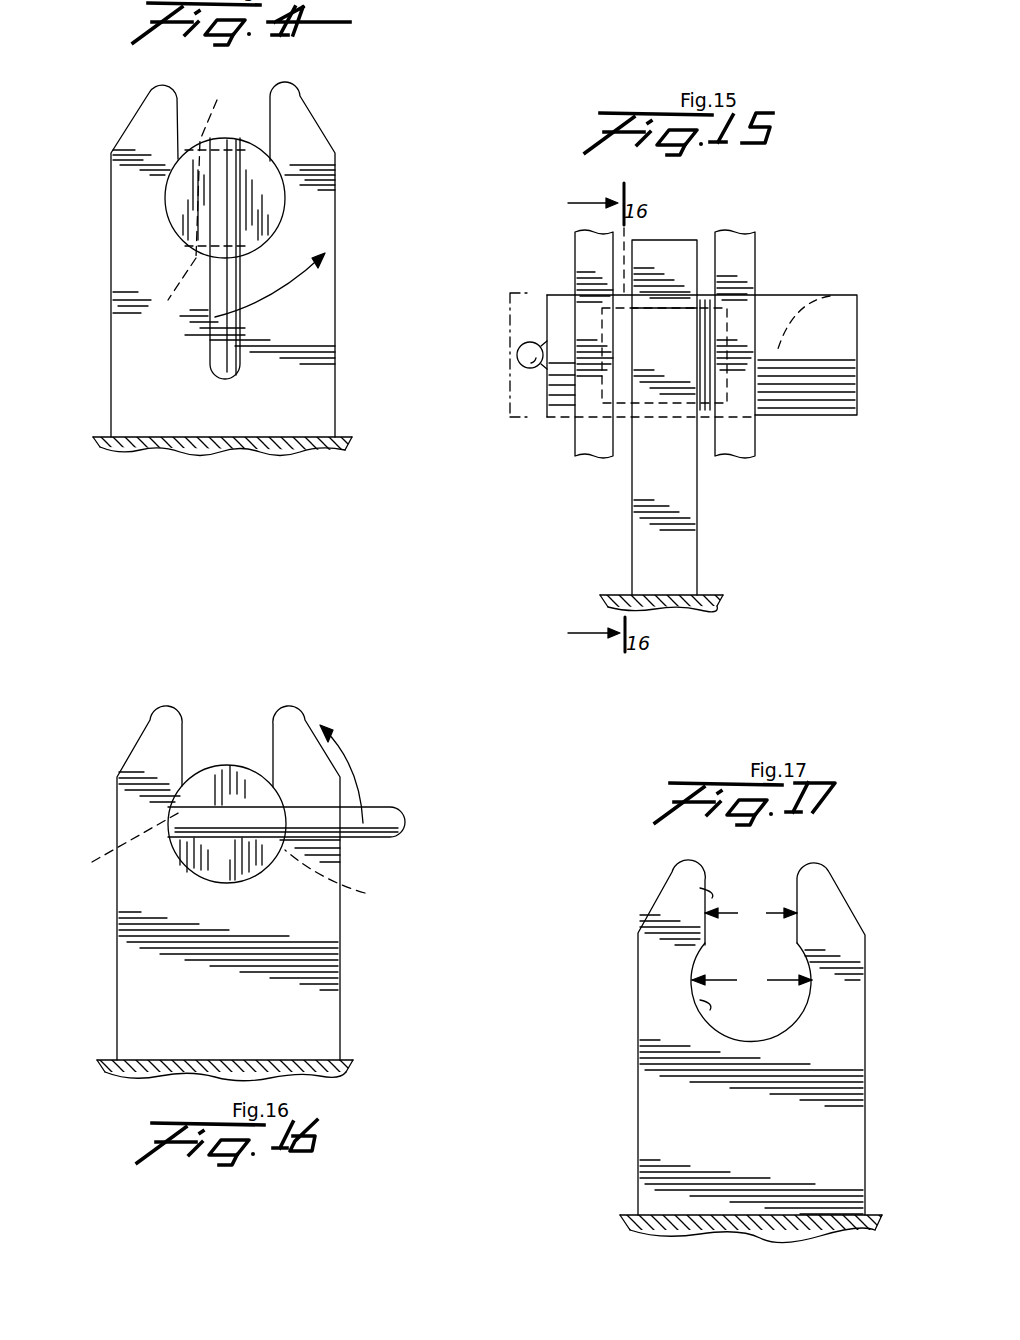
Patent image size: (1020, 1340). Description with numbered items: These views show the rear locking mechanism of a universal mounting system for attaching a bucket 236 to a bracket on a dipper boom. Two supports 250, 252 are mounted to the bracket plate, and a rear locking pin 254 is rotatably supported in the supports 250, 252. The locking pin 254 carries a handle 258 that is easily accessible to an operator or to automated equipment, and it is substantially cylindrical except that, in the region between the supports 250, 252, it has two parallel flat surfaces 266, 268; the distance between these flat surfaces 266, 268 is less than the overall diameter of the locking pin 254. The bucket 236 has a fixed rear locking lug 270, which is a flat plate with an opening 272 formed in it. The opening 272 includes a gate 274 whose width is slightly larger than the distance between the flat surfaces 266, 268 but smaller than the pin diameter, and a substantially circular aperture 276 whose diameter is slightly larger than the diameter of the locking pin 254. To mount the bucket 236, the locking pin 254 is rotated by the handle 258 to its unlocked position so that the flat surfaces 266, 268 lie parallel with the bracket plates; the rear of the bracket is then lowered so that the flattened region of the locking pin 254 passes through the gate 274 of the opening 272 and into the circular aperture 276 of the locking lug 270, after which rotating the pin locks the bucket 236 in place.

In FIG. 14, the bucket 236 is at (197, 448).
In FIG. 15, the bucket 236 is at (713, 597).
In FIG. 16, the bucket 236 is at (300, 1072).
In FIG. 17, the bucket 236 is at (758, 1230).
In FIG. 15, the support 250 is at (755, 255).
In FIG. 15, the support 252 is at (585, 438).
In FIG. 14, the rear locking pin 254 is at (285, 197).
In FIG. 15, the rear locking pin 254 is at (787, 295).
In FIG. 16, the rear locking pin 254 is at (212, 765).
In FIG. 14, the handle 258 is at (220, 348).
In FIG. 15, the handle 258 is at (527, 370).
In FIG. 16, the handle 258 is at (375, 815).
In FIG. 14, the flat surface 266 is at (218, 168).
In FIG. 16, the flat surface 266 is at (117, 843).
In FIG. 14, the flat surface 268 is at (192, 310).
In FIG. 15, the flat surface 268 is at (698, 327).
In FIG. 16, the flat surface 268 is at (343, 876).
In FIG. 14, the rear locking lug 270 is at (128, 265).
In FIG. 15, the rear locking lug 270 is at (692, 530).
In FIG. 16, the rear locking lug 270 is at (125, 973).
In FIG. 17, the rear locking lug 270 is at (850, 1037).
In FIG. 17, the opening 272 is at (753, 885).
In FIG. 17, the gate 274 is at (712, 893).
In FIG. 17, the circular aperture 276 is at (707, 1003).